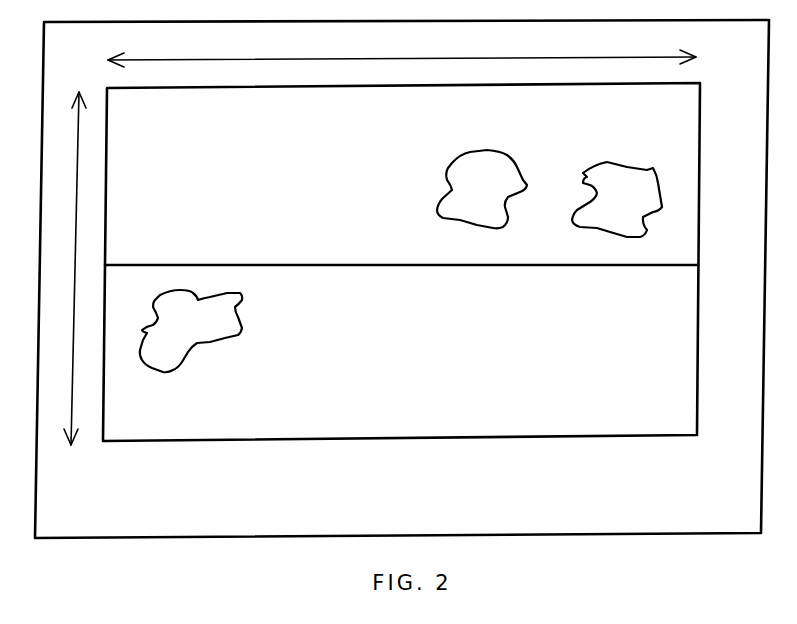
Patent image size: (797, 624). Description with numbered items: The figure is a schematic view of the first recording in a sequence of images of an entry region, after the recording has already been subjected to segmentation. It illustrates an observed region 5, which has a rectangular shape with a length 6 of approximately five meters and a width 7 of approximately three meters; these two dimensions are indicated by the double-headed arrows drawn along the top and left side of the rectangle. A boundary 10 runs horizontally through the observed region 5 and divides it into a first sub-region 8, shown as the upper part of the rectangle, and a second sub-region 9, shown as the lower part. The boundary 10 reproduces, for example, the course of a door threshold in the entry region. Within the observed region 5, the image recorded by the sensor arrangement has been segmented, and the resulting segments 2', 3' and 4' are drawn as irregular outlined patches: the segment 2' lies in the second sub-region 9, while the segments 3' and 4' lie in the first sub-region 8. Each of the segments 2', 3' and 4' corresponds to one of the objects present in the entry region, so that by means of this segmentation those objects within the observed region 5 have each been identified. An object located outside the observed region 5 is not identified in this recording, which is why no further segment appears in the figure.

The segment 2' is at (191, 331).
The segment 3' is at (482, 189).
The segment 4' is at (617, 199).
The observed region 5 is at (699, 353).
The length 6 is at (382, 57).
The width 7 is at (75, 240).
The first sub-region 8 is at (123, 127).
The second sub-region 9 is at (165, 422).
The boundary 10 is at (555, 265).